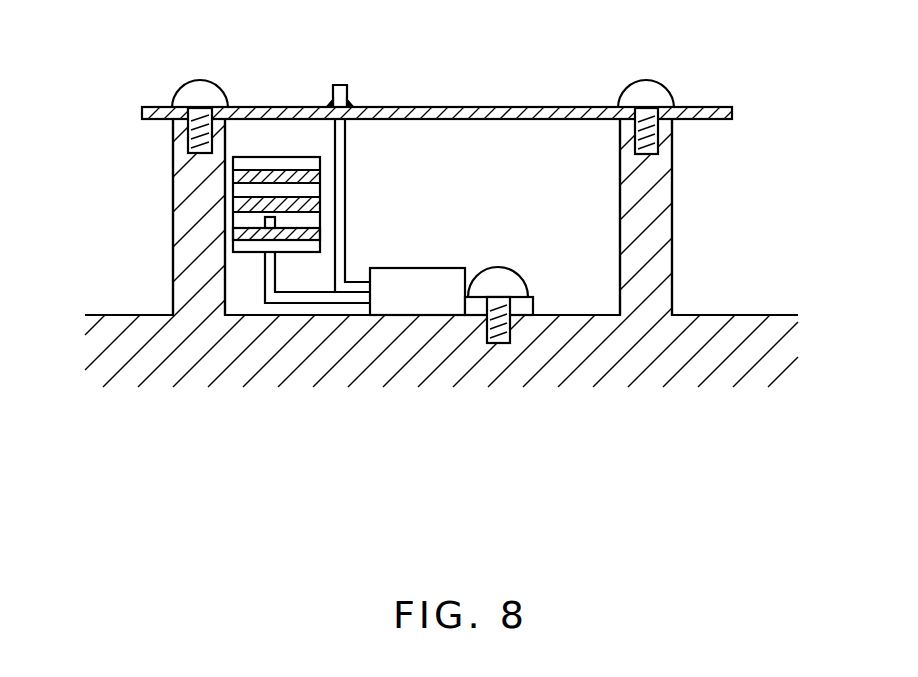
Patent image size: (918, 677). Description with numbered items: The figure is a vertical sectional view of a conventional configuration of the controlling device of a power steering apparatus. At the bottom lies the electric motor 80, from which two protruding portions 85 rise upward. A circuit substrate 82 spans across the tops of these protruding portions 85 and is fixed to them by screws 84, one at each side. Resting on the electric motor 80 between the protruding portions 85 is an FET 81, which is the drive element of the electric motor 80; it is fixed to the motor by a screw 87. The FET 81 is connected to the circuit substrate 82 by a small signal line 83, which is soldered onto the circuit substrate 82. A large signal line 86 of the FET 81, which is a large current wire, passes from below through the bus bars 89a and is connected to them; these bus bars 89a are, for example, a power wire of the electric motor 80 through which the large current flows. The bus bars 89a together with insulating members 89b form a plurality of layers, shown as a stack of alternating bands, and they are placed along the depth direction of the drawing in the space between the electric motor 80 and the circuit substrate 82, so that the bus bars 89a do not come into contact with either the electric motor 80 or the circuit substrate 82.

The electric motor 80 is at (620, 367).
The FET 81 is at (398, 305).
The circuit substrate 82 is at (152, 107).
The small signal line 83 is at (343, 85).
The screw 84 is at (203, 108).
The protruding portion 85 is at (185, 278).
The large signal line 86 is at (265, 222).
The screw 87 is at (500, 300).
The bus bar 89a is at (320, 233).
The insulating member 89b is at (313, 163).